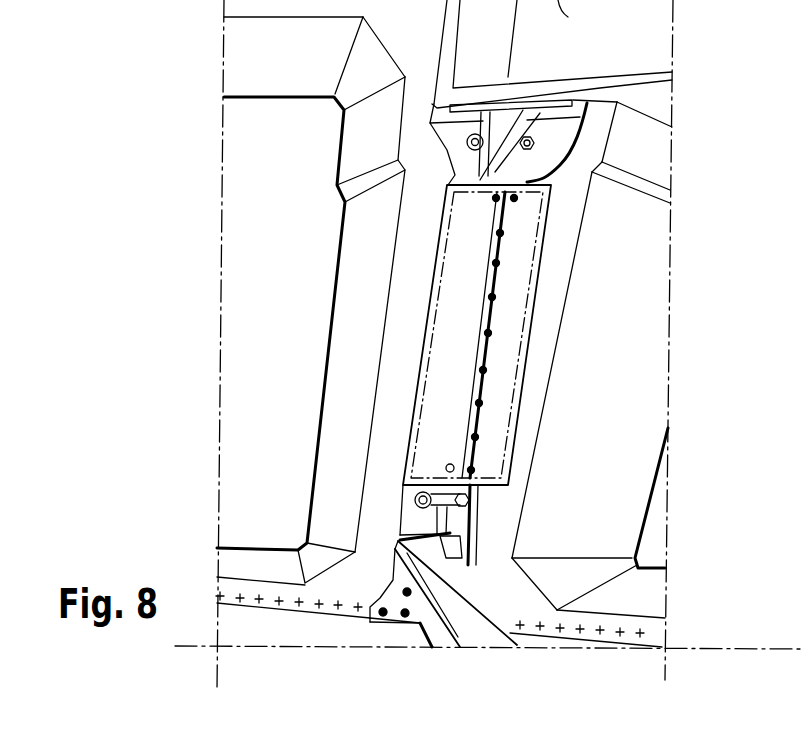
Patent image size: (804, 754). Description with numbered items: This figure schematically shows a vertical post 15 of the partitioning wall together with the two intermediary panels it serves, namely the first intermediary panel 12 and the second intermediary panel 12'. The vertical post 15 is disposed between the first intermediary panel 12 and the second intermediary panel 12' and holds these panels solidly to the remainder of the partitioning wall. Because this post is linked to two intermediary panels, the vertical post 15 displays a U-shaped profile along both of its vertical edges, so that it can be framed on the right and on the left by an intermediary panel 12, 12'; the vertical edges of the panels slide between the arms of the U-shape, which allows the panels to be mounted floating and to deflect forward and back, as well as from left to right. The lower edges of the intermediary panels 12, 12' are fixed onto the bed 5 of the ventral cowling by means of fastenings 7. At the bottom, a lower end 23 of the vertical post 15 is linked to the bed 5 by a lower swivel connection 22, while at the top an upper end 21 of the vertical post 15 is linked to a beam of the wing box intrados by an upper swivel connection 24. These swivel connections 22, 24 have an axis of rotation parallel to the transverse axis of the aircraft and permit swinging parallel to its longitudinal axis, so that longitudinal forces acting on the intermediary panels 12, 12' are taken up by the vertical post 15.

The bed 5 is at (355, 632).
The fastenings 7 is at (298, 602).
The first intermediary panel 12 is at (623, 395).
The second intermediary panel 12' is at (271, 300).
The vertical post 15 is at (527, 258).
The upper end 21 is at (592, 172).
The lower swivel connection 22 is at (480, 500).
The lower end 23 is at (430, 522).
The upper swivel connection 24 is at (433, 140).